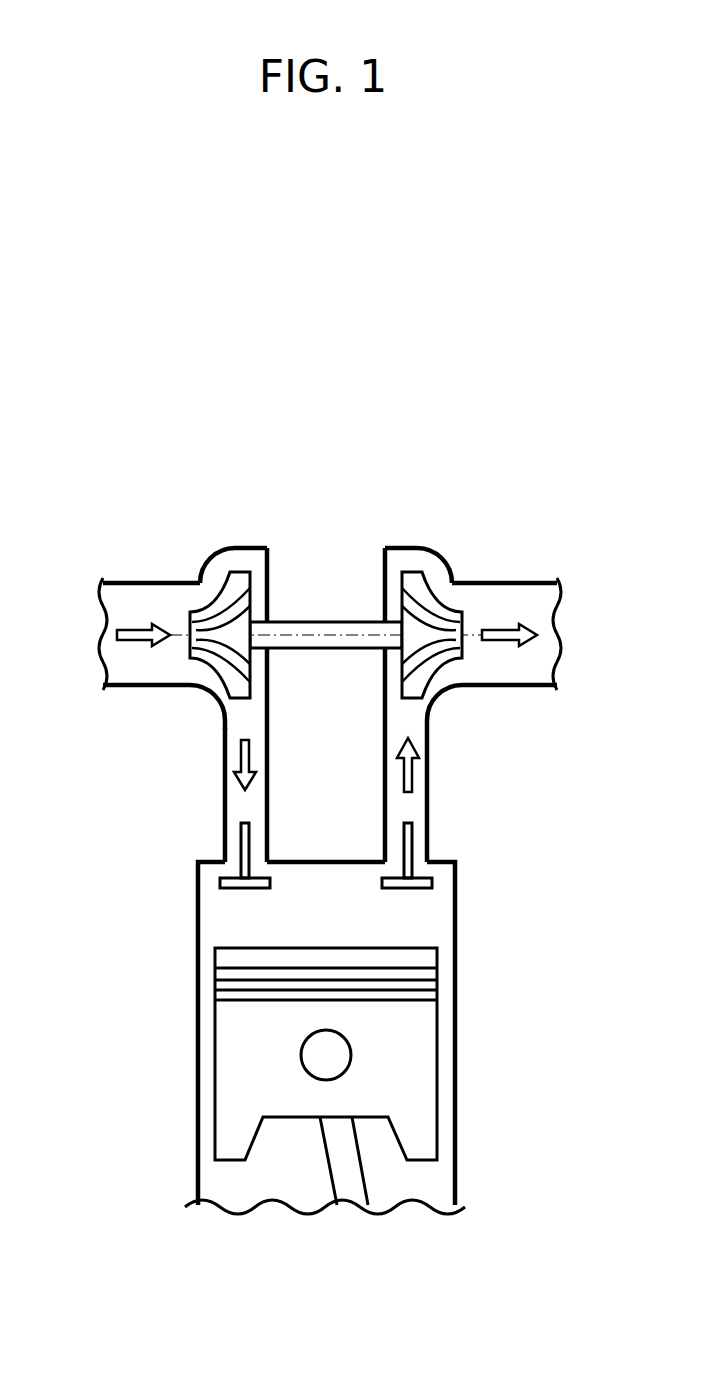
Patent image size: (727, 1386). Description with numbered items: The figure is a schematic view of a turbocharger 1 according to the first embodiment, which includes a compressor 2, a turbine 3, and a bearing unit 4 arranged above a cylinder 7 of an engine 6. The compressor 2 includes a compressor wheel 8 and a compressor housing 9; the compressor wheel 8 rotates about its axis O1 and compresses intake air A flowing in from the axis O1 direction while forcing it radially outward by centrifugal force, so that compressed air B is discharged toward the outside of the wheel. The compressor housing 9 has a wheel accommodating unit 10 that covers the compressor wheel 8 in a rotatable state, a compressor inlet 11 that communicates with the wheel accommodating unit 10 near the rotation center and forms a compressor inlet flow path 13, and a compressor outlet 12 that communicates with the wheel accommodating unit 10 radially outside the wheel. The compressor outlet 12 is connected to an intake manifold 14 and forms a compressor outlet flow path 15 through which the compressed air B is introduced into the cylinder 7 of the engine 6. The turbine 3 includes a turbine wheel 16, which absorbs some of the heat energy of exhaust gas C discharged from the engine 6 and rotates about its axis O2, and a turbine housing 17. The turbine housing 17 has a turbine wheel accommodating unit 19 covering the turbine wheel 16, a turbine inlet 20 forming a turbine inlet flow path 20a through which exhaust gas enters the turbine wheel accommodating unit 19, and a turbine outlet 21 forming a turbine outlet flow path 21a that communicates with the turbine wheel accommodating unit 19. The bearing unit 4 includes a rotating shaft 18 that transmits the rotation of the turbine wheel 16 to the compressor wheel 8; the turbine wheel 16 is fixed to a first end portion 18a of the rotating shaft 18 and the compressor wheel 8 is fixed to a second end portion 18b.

The turbocharger 1 is at (400, 515).
The compressor 2 is at (247, 538).
The turbine 3 is at (441, 552).
The bearing unit 4 is at (327, 612).
The engine 6 is at (462, 1010).
The cylinder 7 is at (457, 915).
The compressor wheel 8 is at (203, 605).
The compressor housing 9 is at (212, 600).
The wheel accommodating unit 10 is at (210, 598).
The compressor inlet 11 is at (125, 583).
The compressor outlet 12 is at (223, 724).
The compressor inlet flow path 13 is at (162, 655).
The intake manifold 14 is at (223, 820).
The compressor outlet flow path 15 is at (243, 733).
The turbine wheel 16 is at (447, 600).
The turbine housing 17 is at (414, 545).
The rotating shaft 18 is at (332, 640).
The first end portion 18a is at (402, 650).
The second end portion 18b is at (243, 650).
The turbine wheel accommodating unit 19 is at (393, 545).
The turbine inlet 20 is at (383, 718).
The turbine inlet flow path 20a is at (400, 728).
The turbine outlet 21 is at (530, 583).
The turbine outlet flow path 21a is at (522, 665).
The intake air A is at (135, 625).
The compressed air B is at (235, 757).
The exhaust gas C is at (413, 773).
The axis O1 is at (178, 632).
The axis O2 is at (475, 632).